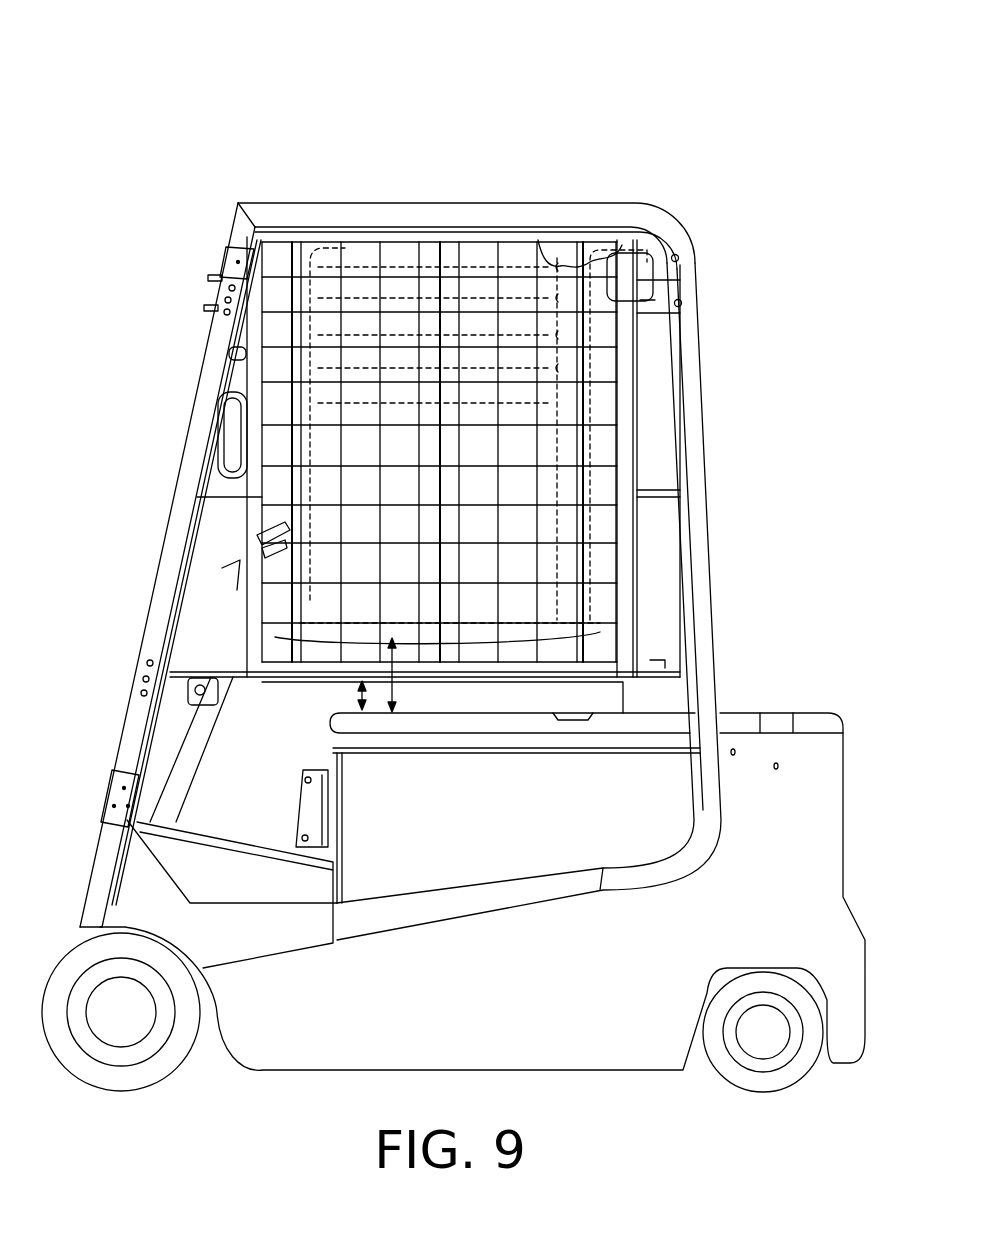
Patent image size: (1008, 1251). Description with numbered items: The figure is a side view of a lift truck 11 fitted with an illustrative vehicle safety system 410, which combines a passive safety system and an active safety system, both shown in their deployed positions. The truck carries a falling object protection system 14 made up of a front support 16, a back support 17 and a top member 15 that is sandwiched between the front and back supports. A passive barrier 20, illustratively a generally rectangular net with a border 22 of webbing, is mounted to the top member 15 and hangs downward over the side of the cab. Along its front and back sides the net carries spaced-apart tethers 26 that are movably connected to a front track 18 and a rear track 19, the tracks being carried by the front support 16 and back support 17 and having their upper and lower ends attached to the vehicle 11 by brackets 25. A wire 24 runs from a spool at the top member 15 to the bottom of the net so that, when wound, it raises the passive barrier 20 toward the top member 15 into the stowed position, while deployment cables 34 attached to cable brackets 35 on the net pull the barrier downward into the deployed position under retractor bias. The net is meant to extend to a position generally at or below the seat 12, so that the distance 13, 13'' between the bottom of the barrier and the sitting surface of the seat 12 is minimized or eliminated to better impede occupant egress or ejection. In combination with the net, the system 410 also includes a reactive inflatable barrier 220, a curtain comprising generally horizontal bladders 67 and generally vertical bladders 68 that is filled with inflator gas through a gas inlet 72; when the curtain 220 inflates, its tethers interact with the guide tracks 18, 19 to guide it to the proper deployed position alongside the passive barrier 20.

The vehicle safety system 410 is at (197, 107).
The lift truck 11 is at (843, 690).
The seat 12 is at (535, 700).
The distance 13 is at (323, 703).
The distance 13'' is at (438, 675).
The falling object protection system 14 is at (520, 178).
The top member 15 is at (418, 212).
The front support 16 is at (190, 470).
The back support 17 is at (693, 410).
The front track 18 is at (243, 350).
The rear track 19 is at (673, 392).
The passive barrier 20 is at (558, 404).
The border 22 is at (628, 612).
The wire 24 is at (432, 410).
The bracket 25 is at (235, 255).
The tether 26 is at (672, 278).
The deployment cable 34 is at (172, 685).
The cable bracket 35 is at (158, 747).
The horizontal bladder 67 is at (393, 290).
The vertical bladder 68 is at (320, 594).
The gas inlet 72 is at (635, 273).
The inflatable barrier 220 is at (560, 252).